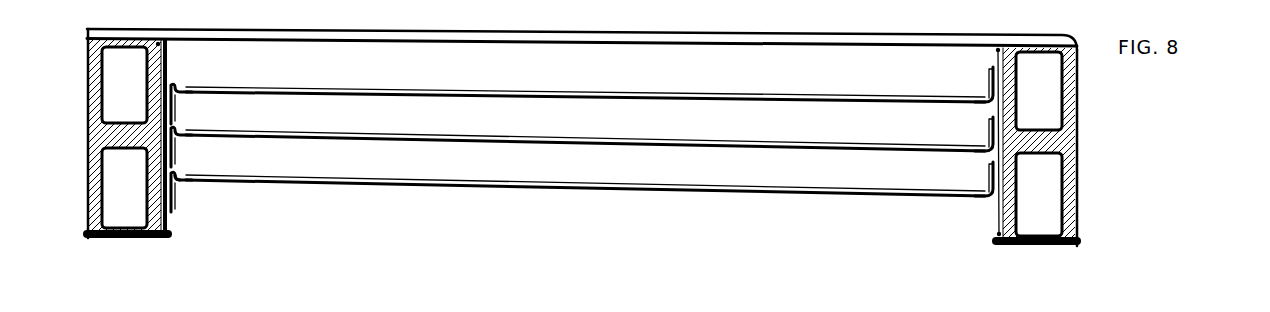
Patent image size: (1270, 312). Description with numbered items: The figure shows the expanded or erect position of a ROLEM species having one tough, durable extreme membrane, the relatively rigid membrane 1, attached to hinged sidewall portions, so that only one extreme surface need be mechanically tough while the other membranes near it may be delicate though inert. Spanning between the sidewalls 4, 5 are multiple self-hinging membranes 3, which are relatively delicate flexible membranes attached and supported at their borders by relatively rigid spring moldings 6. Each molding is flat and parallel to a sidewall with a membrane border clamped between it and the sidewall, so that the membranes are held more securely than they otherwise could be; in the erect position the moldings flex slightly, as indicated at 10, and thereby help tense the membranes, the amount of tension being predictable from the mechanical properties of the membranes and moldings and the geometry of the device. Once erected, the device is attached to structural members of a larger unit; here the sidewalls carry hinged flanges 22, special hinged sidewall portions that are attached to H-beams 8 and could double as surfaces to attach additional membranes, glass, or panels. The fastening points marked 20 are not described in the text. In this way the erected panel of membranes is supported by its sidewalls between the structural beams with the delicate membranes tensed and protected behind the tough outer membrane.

The relatively rigid membrane 1 is at (380, 32).
The self-hinging membranes 3 is at (525, 184).
The sidewall 4 is at (160, 71).
The sidewall 5 is at (996, 206).
The spring moldings 6 is at (181, 103).
The H-beams 8 is at (120, 129).
The slight flexing of moldings 10 is at (184, 192).
The rivets 20 is at (170, 49).
The hinged flanges 22 is at (124, 233).